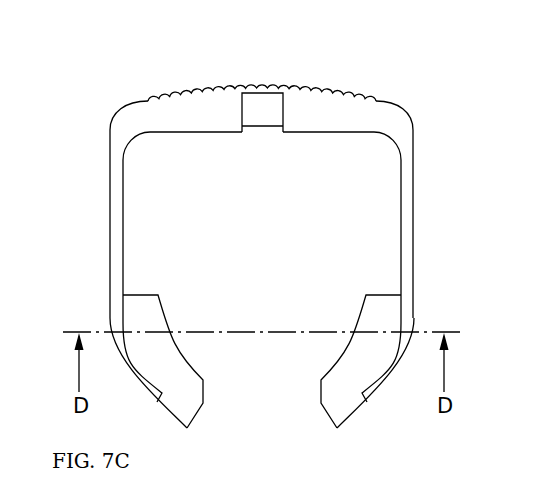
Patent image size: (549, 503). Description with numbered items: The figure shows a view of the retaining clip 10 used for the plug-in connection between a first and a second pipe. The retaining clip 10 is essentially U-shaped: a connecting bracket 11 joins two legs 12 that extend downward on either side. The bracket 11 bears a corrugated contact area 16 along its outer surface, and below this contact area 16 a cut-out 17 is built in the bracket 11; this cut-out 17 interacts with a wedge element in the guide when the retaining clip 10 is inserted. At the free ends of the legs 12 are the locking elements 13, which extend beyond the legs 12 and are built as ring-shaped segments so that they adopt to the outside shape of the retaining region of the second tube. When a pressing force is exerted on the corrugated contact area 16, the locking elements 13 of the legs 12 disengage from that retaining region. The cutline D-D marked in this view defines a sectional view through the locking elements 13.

The retaining clip 10 is at (432, 93).
The connecting bracket 11 is at (352, 110).
The legs 12 is at (110, 238).
The locking elements 13 is at (160, 350).
The corrugated contact area 16 is at (196, 89).
The cut-out 17 is at (263, 111).